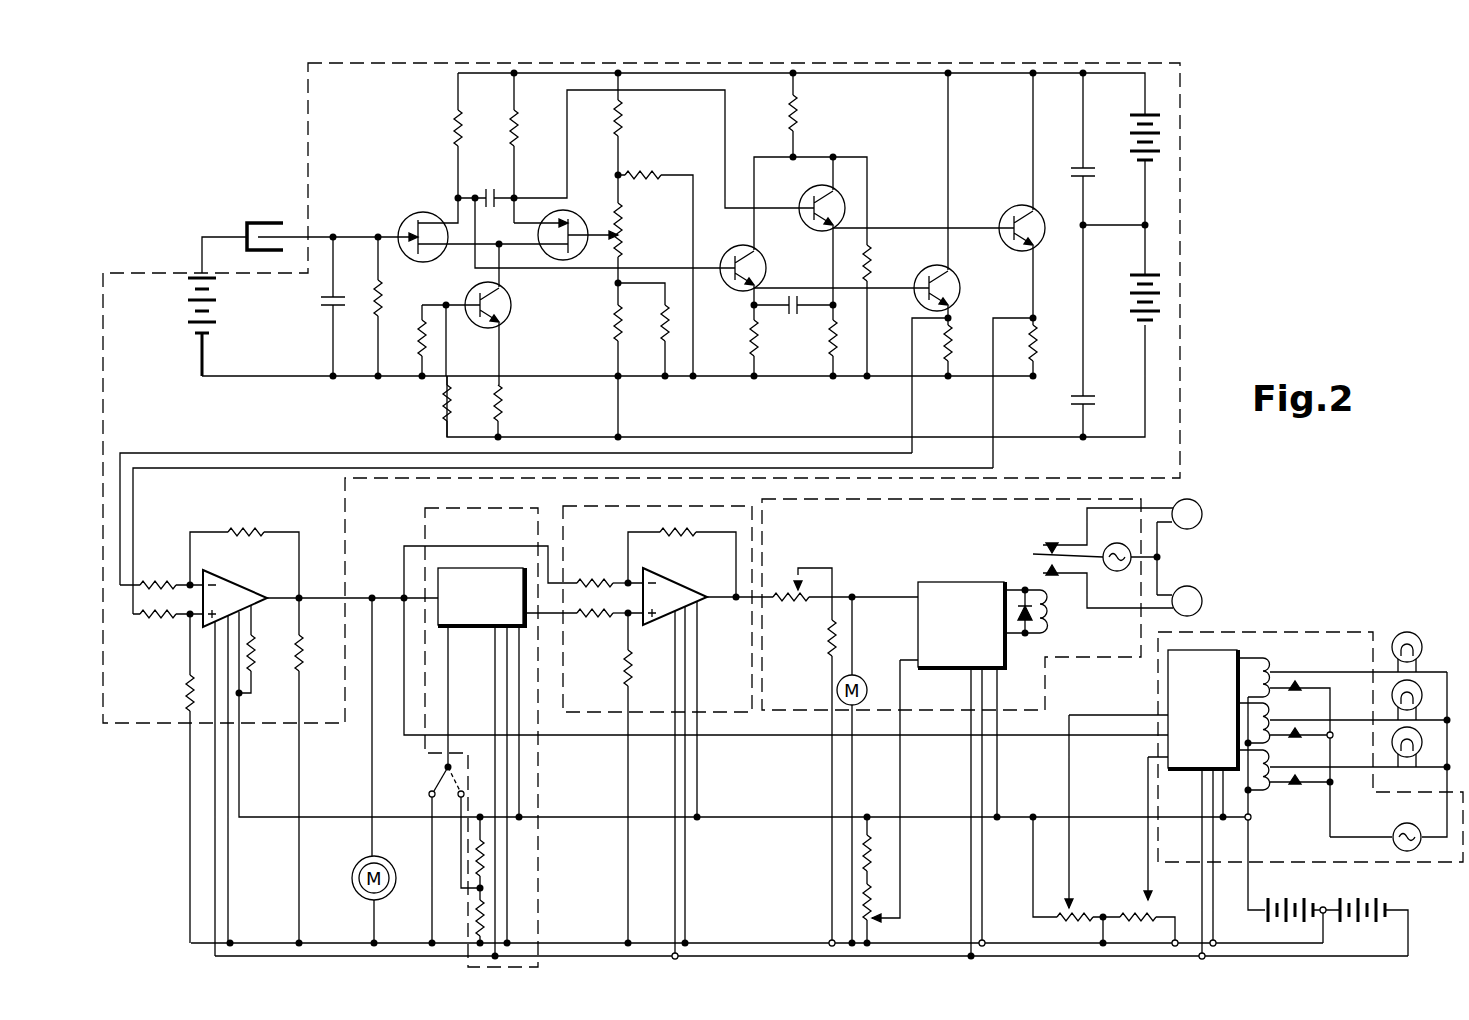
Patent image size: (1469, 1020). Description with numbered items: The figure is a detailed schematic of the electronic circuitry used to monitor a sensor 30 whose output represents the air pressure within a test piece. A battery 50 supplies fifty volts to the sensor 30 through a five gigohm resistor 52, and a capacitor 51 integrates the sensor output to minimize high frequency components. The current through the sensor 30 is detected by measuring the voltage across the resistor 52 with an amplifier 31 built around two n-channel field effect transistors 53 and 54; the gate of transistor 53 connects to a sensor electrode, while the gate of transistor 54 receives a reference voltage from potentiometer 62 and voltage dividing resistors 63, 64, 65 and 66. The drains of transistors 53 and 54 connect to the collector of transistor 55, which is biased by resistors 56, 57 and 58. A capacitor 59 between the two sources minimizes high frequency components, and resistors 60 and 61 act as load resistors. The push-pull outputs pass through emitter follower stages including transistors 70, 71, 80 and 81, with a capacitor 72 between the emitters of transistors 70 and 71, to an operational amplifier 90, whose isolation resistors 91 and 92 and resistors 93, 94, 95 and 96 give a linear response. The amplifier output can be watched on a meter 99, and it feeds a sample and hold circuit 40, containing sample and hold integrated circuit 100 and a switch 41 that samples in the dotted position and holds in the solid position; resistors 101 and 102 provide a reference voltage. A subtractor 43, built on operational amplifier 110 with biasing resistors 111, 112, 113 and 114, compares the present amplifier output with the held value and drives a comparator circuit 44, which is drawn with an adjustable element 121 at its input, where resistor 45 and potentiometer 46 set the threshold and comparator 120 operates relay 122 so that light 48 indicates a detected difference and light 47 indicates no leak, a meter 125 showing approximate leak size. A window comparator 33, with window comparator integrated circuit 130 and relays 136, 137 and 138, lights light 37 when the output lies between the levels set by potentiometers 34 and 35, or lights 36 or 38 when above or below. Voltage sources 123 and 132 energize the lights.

The sensor 30 is at (262, 216).
The amplifier 31 is at (164, 288).
The window comparator 33 is at (1294, 630).
The potentiometer 34 is at (1087, 912).
The potentiometer 35 is at (1155, 912).
The light 36 is at (1413, 632).
The light 37 is at (1391, 703).
The light 38 is at (1391, 750).
The sample and hold circuit 40 is at (500, 535).
The switch 41 is at (438, 787).
The subtractor 43 is at (738, 701).
The comparator circuit 44 is at (826, 528).
The resistor 45 is at (872, 864).
The potentiometer 46 is at (874, 910).
The light 47 is at (1203, 510).
The light 48 is at (1203, 598).
The battery 50 is at (218, 324).
The capacitor 51 is at (322, 300).
The resistor 52 is at (371, 305).
The field effect transistor 53 is at (418, 214).
The field effect transistor 54 is at (580, 222).
The transistor 55 is at (506, 323).
The resistor 56 is at (417, 330).
The resistor 57 is at (438, 404).
The resistor 58 is at (507, 404).
The capacitor 59 is at (486, 188).
The load resistor 60 is at (453, 133).
The load resistor 61 is at (512, 134).
The potentiometer 62 is at (626, 226).
The voltage dividing resistor 63 is at (626, 124).
The voltage dividing resistor 64 is at (654, 174).
The voltage dividing resistor 65 is at (612, 324).
The voltage dividing resistor 66 is at (668, 340).
The transistor 70 is at (737, 248).
The transistor 71 is at (803, 200).
The capacitor 72 is at (794, 316).
The transistor 80 is at (961, 283).
The transistor 81 is at (1018, 208).
The operational amplifier 90 is at (232, 588).
The isolation resistor 91 is at (168, 582).
The isolation resistor 92 is at (162, 619).
The resistor 93 is at (246, 531).
The resistor 94 is at (305, 656).
The resistor 95 is at (183, 688).
The resistor 96 is at (258, 656).
The meter 99 is at (364, 866).
The sample and hold 100 is at (482, 629).
The resistor 101 is at (492, 866).
The resistor 102 is at (485, 918).
The operational amplifier 110 is at (668, 588).
The biasing resistor 111 is at (595, 578).
The biasing resistor 112 is at (593, 619).
The biasing resistor 113 is at (666, 537).
The biasing resistor 114 is at (619, 676).
The comparator 120 is at (980, 637).
The potentiometer 121 is at (793, 618).
The relay 122 is at (1058, 628).
The voltage source 123 is at (1115, 545).
The meter 125 is at (863, 680).
The window comparator 130 is at (1222, 718).
The voltage source 132 is at (1394, 827).
The relay 136 is at (1280, 666).
The relay 137 is at (1278, 721).
The relay 138 is at (1275, 804).